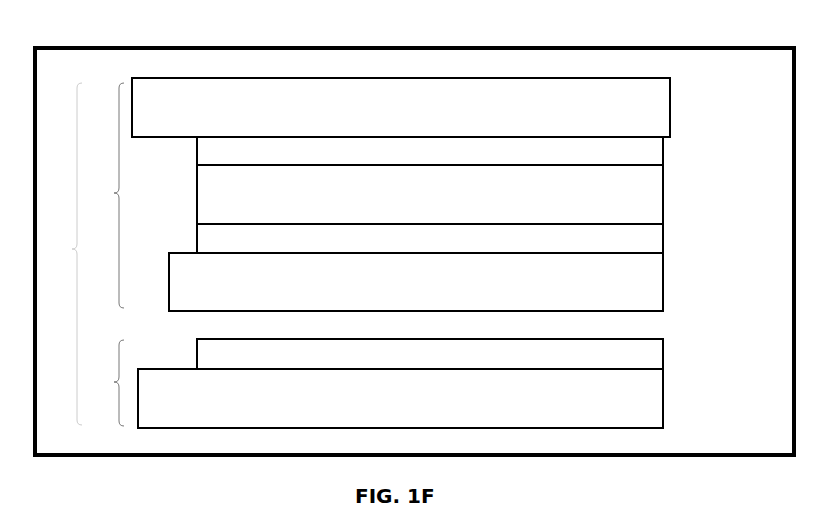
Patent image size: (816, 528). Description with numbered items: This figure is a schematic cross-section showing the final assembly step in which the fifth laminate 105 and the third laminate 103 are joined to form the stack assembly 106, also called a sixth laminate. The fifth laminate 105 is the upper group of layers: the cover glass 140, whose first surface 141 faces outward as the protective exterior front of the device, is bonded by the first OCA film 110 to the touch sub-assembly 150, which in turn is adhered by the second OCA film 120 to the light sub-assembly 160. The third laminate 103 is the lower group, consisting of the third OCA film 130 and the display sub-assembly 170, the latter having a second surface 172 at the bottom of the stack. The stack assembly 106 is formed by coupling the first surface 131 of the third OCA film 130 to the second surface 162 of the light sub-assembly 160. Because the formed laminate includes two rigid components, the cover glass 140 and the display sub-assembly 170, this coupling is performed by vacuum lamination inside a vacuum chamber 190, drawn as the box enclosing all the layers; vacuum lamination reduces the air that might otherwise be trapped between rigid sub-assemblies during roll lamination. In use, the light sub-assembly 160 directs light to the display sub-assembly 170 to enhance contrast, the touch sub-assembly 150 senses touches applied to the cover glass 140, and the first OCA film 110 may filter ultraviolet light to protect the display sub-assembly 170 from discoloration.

The vacuum chamber 190 is at (657, 48).
The cover glass 140 is at (670, 108).
The first surface of cover glass 141 is at (256, 78).
The first OCA film 110 is at (663, 152).
The touch sub-assembly 150 is at (663, 196).
The second OCA film 120 is at (663, 239).
The light sub-assembly 160 is at (663, 283).
The second surface of light sub-assembly 162 is at (257, 311).
The third OCA film 130 is at (663, 355).
The first surface of third OCA film 131 is at (489, 339).
The display sub-assembly 170 is at (663, 399).
The second surface of display sub-assembly 172 is at (490, 428).
The fifth laminate 105 is at (103, 195).
The third laminate 103 is at (103, 383).
The stack assembly 106 is at (61, 254).